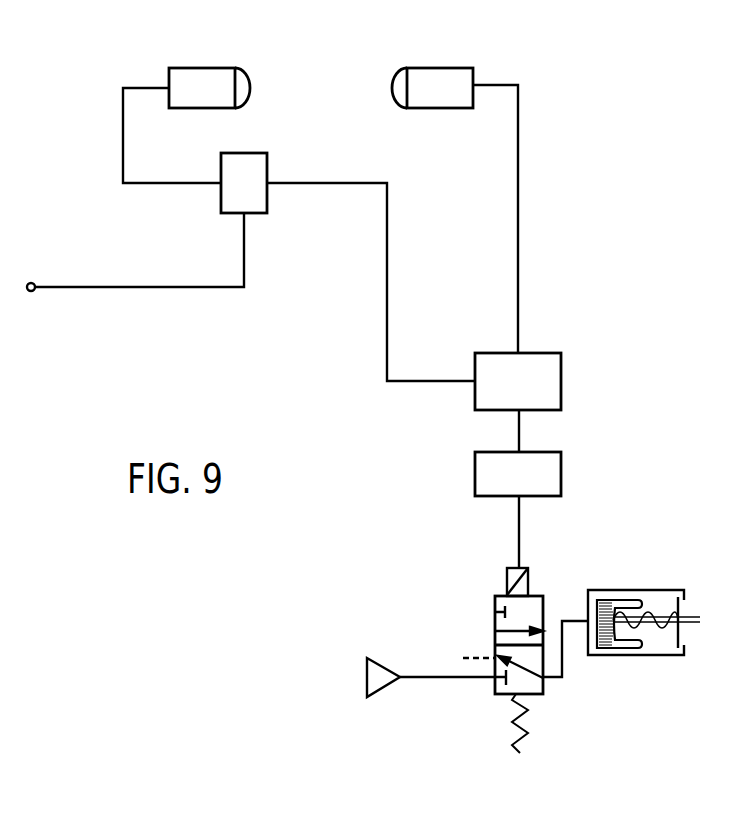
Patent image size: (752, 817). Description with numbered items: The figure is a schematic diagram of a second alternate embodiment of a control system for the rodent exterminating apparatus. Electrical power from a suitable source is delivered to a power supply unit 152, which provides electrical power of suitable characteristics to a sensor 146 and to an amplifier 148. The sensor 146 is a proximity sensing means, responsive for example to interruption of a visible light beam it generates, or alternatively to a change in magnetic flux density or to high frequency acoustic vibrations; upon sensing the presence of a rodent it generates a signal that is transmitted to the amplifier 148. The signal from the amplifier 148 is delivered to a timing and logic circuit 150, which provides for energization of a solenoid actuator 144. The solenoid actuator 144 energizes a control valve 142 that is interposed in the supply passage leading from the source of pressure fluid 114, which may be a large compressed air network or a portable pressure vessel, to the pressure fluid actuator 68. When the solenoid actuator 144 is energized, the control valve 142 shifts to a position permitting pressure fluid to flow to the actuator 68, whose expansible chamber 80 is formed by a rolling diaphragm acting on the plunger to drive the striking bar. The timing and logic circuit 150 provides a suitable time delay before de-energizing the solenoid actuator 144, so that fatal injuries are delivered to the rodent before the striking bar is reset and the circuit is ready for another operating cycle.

The sensor 146 is at (213, 68).
The power supply unit 152 is at (267, 168).
The amplifier 148 is at (561, 372).
The timing and logic circuit 150 is at (561, 470).
The solenoid actuator 144 is at (507, 580).
The control valve 142 is at (544, 683).
The source of pressure fluid 114 is at (385, 688).
The pressure fluid actuator 68 is at (619, 578).
The expansible chamber 80 is at (623, 648).